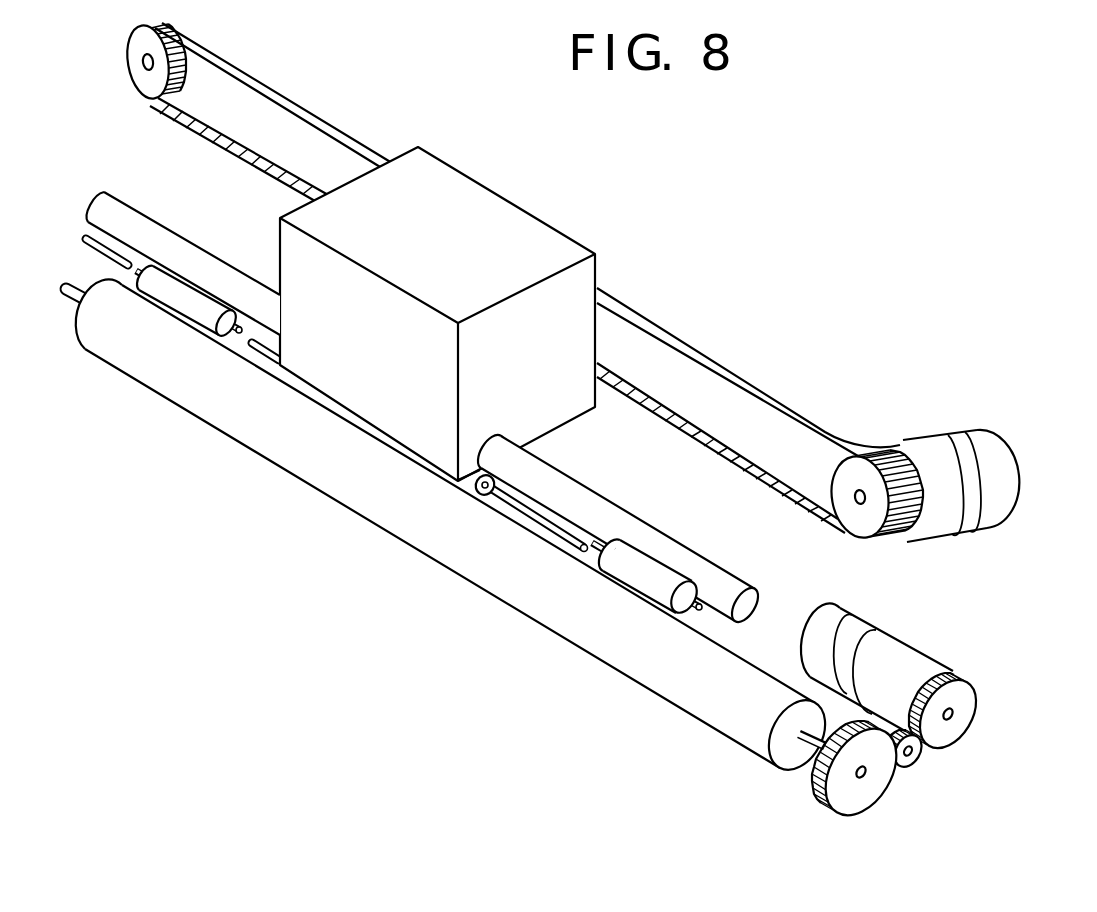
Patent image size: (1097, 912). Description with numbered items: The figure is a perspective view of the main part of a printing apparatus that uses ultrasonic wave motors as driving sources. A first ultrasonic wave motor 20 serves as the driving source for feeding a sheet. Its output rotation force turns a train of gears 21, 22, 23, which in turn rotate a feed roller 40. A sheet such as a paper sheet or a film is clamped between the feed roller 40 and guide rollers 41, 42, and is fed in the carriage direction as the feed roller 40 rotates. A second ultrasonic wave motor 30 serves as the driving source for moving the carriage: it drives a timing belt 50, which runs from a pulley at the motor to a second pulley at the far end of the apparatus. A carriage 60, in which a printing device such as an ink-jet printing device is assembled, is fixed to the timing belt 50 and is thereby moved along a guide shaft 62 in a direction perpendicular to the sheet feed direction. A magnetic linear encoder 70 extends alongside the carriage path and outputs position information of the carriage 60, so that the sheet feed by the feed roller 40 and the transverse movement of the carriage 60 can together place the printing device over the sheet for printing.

The first ultrasonic wave motor 20 is at (892, 645).
The gear 21 is at (950, 730).
The gear 22 is at (908, 762).
The gear 23 is at (858, 797).
The second ultrasonic wave motor 30 is at (988, 452).
The feed roller 40 is at (550, 612).
The guide roller 41 is at (645, 583).
The guide roller 42 is at (183, 302).
The timing belt 50 is at (767, 397).
The carriage 60 is at (533, 233).
The guide shaft 62 is at (603, 505).
The magnetic linear encoder 70 is at (530, 517).